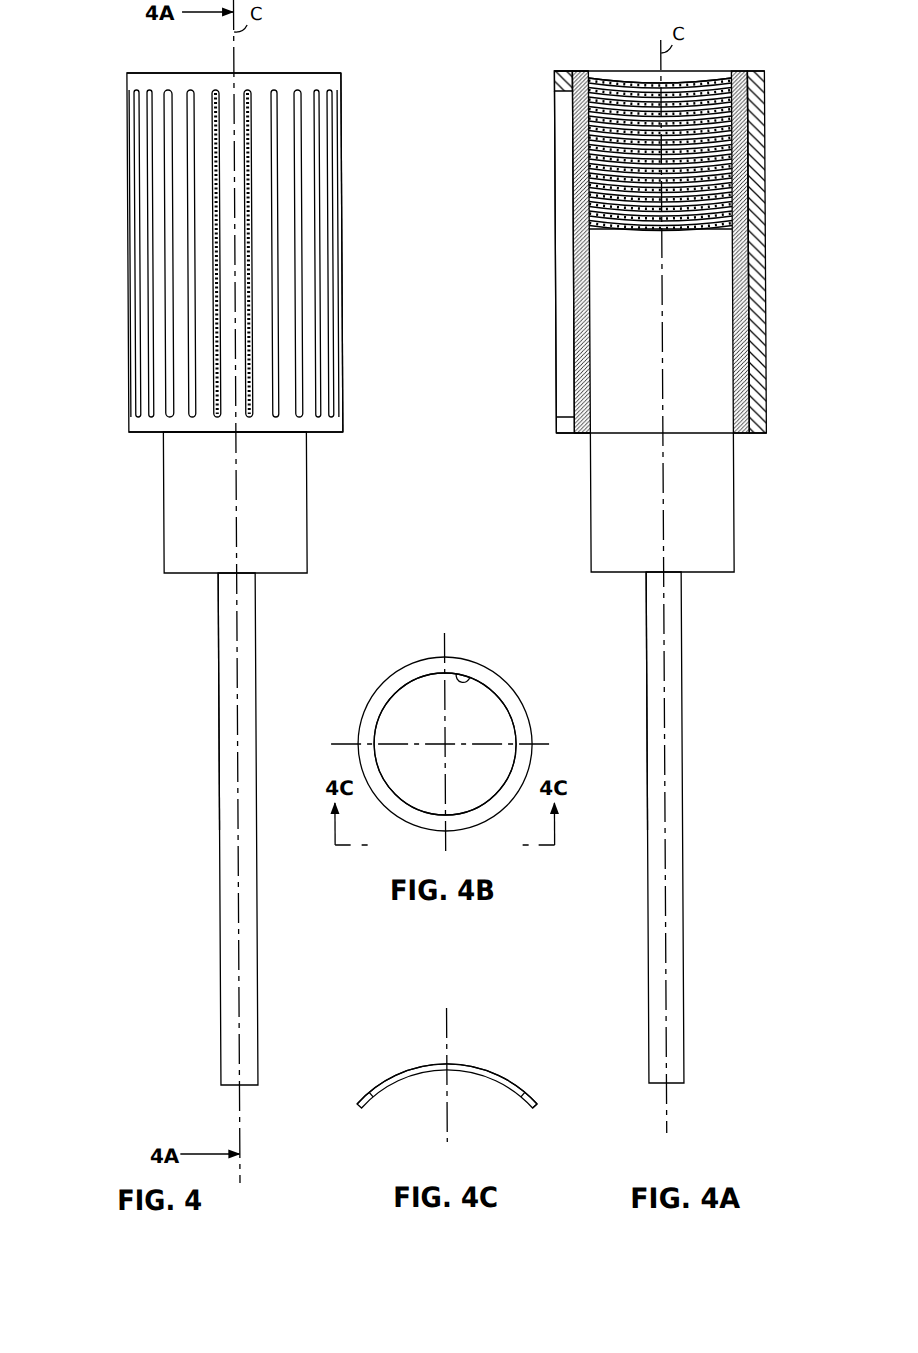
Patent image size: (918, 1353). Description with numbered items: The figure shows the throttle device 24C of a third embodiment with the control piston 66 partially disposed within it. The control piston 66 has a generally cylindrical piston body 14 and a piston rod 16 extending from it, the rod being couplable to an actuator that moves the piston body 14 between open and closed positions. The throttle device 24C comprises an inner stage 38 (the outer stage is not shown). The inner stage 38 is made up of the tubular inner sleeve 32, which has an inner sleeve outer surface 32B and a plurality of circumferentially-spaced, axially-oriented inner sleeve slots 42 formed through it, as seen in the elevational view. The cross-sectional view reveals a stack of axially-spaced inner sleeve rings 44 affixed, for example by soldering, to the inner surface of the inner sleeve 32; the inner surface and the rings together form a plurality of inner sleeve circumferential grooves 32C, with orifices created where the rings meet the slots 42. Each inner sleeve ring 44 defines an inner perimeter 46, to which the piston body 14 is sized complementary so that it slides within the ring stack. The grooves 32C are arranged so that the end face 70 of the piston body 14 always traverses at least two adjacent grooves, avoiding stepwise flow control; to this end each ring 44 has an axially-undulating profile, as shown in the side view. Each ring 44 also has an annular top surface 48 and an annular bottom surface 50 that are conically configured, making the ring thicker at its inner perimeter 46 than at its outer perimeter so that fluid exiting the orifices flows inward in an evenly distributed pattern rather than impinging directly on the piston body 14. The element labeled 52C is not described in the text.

In FIG. 4, the piston body 14 is at (172, 525).
In FIG. 4A, the piston body 14 is at (595, 512).
In FIG. 4, the piston rod 16 is at (216, 933).
In FIG. 4A, the piston rod 16 is at (681, 897).
In FIG. 4, the throttle device 24C is at (126, 270).
In FIG. 4A, the throttle device 24C is at (765, 278).
In FIG. 4, the inner sleeve 32 is at (126, 432).
In FIG. 4A, the inner sleeve 32 is at (765, 433).
In FIG. 4, the inner sleeve outer surface 32B is at (126, 85).
In FIG. 4A, the inner sleeve circumferential grooves 32C is at (749, 181).
In FIG. 4, the inner stage 38 is at (330, 433).
In FIG. 4A, the inner stage 38 is at (554, 365).
In FIG. 4, the inner sleeve slots 42 is at (297, 89).
In FIG. 4A, the inner sleeve slots 42 is at (560, 135).
In FIG. 4A, the inner sleeve rings 44 is at (708, 84).
In FIG. 4B, the inner sleeve rings 44 is at (524, 691).
In FIG. 4C, the inner sleeve rings 44 is at (494, 1044).
In FIG. 4A, the inner perimeter 46 is at (749, 130).
In FIG. 4B, the inner perimeter 46 is at (454, 672).
In FIG. 4A, the annular top surface 48 is at (582, 80).
In FIG. 4B, the annular top surface 48 is at (391, 688).
In FIG. 4C, the annular top surface 48 is at (512, 1088).
In FIG. 4A, the annular bottom surface 50 is at (573, 95).
In FIG. 4C, the annular bottom surface 50 is at (509, 1102).
In FIG. 4A, the top ring 52C is at (612, 72).
In FIG. 4, the control piston 66 is at (215, 658).
In FIG. 4A, the control piston 66 is at (644, 633).
In FIG. 4A, the end face 70 is at (633, 229).